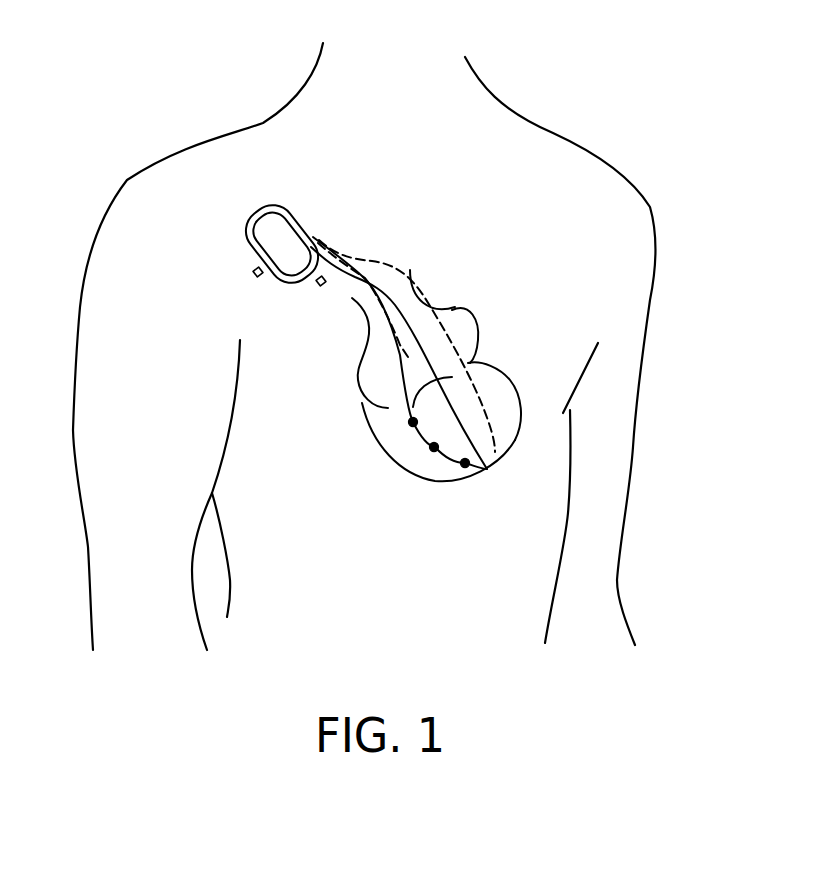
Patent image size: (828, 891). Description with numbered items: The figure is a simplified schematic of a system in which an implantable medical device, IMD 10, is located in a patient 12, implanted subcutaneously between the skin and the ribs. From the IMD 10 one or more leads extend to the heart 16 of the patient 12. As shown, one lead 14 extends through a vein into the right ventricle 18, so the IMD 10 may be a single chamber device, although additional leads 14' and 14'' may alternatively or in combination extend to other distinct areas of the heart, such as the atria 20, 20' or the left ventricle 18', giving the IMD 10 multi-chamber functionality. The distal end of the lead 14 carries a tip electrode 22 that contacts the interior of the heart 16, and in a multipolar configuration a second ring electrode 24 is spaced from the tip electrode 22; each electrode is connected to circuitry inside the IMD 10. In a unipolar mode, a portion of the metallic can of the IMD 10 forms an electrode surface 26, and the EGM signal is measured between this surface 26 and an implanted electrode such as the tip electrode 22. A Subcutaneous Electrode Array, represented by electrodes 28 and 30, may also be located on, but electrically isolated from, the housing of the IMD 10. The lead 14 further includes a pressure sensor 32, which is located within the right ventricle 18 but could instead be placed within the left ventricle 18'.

The implantable medical device 10 is at (278, 197).
The patient 12 is at (577, 142).
The lead 14 is at (399, 353).
The lead 14' is at (363, 260).
The lead 14'' is at (407, 324).
The heart 16 is at (498, 367).
The right ventricle 18 is at (438, 468).
The left ventricle 18' is at (513, 418).
The atrium 20 is at (349, 365).
The atrium 20' is at (444, 301).
The tip electrode 22 is at (490, 468).
The ring electrode 24 is at (433, 447).
The electrode surface 26 is at (265, 240).
The electrode 28 is at (260, 271).
The electrode 30 is at (322, 282).
The pressure sensor 32 is at (412, 422).